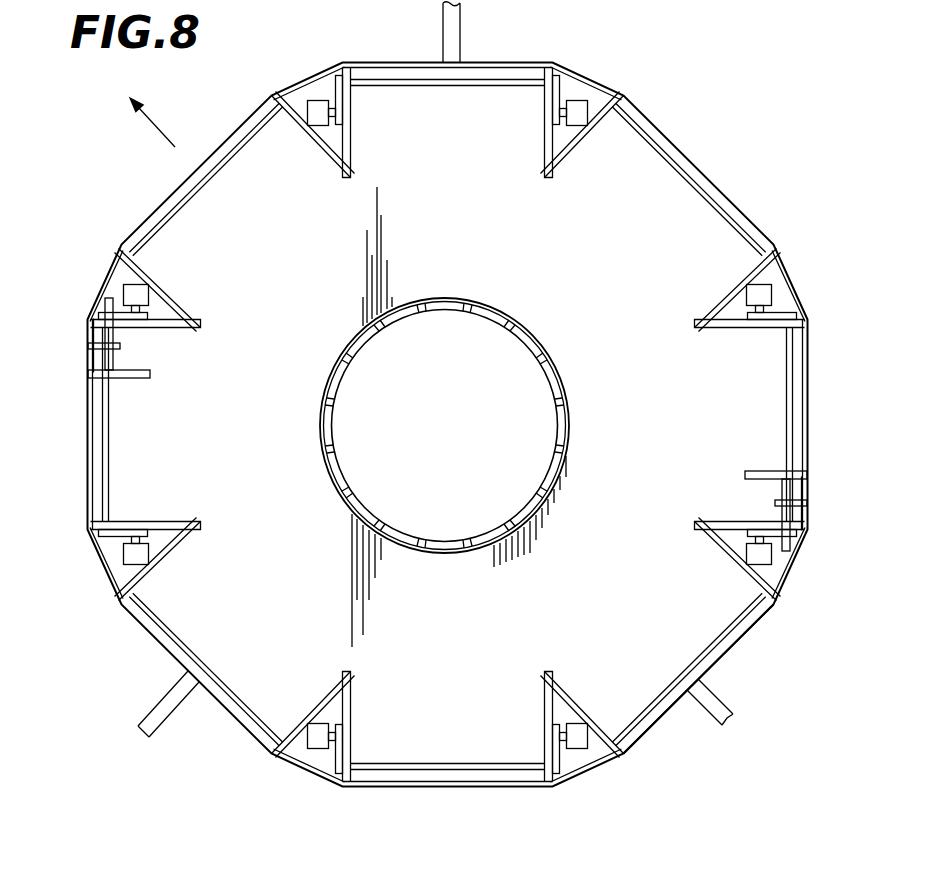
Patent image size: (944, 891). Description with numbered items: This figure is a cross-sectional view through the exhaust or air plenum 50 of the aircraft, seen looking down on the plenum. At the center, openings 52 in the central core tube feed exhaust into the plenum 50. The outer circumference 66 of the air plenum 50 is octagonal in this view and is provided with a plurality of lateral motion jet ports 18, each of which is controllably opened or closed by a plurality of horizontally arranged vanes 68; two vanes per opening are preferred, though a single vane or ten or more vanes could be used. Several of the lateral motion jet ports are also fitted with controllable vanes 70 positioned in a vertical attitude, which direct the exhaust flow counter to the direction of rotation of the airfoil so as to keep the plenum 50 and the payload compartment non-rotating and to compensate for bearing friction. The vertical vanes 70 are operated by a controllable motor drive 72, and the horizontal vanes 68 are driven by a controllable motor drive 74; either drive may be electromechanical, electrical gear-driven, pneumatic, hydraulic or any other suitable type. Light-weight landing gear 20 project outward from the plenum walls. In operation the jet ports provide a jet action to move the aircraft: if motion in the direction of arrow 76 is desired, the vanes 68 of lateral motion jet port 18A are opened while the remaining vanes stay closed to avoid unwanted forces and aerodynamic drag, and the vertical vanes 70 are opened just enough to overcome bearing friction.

The lateral motion jet port 18 is at (545, 52).
The lateral motion jet port 18A is at (683, 700).
The landing gear 20 is at (462, 20).
The air plenum 50 is at (460, 208).
The openings 52 is at (335, 436).
The outer circumference 66 is at (309, 62).
The vanes 68 is at (738, 222).
The controllable vanes 70 is at (86, 360).
The motor drive 72 is at (102, 303).
The motor drive 74 is at (588, 97).
The arrow 76 is at (158, 138).